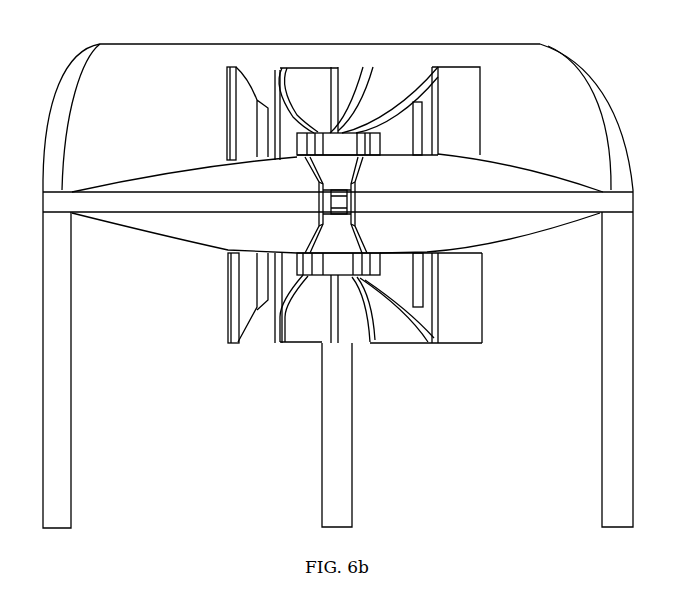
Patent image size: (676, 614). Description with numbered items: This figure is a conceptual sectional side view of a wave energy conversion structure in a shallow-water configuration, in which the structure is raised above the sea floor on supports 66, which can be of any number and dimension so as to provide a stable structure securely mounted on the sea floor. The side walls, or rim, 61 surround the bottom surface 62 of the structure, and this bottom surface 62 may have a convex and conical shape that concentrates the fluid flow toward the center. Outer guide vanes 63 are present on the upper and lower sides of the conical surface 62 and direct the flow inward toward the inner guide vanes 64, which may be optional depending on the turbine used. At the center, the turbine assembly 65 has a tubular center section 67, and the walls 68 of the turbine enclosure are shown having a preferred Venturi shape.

The side walls (rim) 61 is at (77, 87).
The bottom surface 62 is at (237, 183).
The outer guide vanes 63 is at (383, 323).
The inner guide vanes 64 is at (377, 265).
The turbine assembly 65 is at (323, 202).
The supports 66 is at (48, 470).
The tubular center section 67 is at (353, 200).
The walls for the turbine enclosure 68 is at (417, 153).